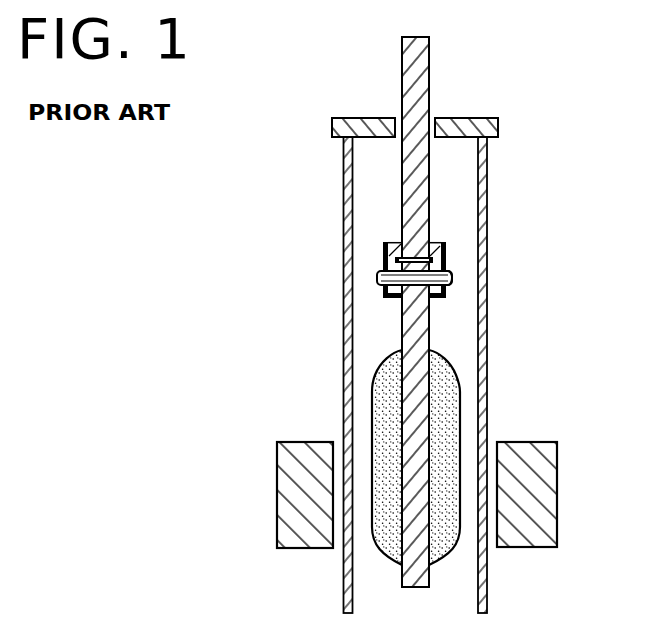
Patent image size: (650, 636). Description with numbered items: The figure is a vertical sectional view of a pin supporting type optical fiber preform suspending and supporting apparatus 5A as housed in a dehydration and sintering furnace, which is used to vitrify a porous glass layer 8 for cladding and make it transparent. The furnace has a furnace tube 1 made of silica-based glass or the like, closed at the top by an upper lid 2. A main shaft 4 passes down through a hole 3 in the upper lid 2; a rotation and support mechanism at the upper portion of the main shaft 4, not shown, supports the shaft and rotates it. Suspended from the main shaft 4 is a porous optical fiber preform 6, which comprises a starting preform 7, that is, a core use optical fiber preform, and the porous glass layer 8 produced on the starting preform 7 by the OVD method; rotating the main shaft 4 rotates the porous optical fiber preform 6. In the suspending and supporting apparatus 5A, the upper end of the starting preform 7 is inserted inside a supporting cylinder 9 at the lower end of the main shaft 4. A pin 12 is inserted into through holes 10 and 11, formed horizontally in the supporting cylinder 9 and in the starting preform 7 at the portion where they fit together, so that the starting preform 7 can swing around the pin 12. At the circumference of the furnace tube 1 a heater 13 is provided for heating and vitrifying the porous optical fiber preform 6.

The furnace tube 1 is at (487, 300).
The upper lid 2 is at (332, 127).
The hole 3 is at (398, 118).
The main shaft 4 is at (423, 78).
The optical fiber preform suspending and supporting apparatus 5A is at (375, 262).
The porous optical fiber preform 6 is at (465, 408).
The starting preform 7 is at (429, 340).
The porous glass layer 8 is at (443, 537).
The supporting cylinder 9 is at (382, 252).
The through hole 10 is at (455, 277).
The through hole 11 is at (422, 285).
The pin 12 is at (378, 278).
The heater 13 is at (287, 510).